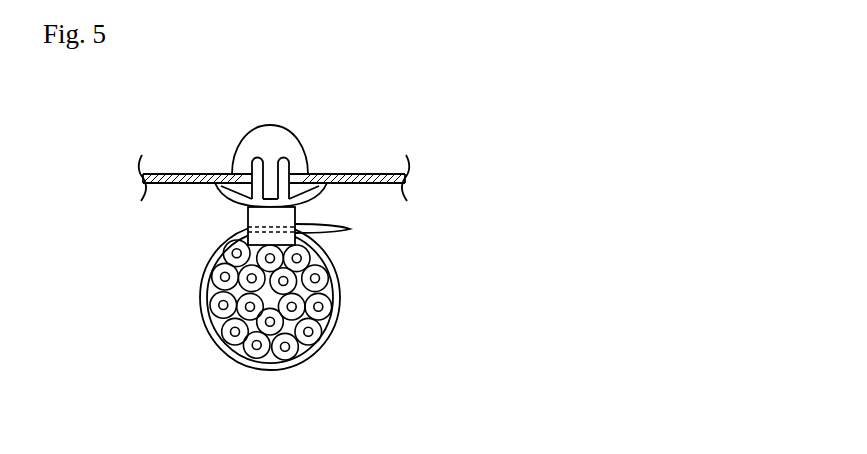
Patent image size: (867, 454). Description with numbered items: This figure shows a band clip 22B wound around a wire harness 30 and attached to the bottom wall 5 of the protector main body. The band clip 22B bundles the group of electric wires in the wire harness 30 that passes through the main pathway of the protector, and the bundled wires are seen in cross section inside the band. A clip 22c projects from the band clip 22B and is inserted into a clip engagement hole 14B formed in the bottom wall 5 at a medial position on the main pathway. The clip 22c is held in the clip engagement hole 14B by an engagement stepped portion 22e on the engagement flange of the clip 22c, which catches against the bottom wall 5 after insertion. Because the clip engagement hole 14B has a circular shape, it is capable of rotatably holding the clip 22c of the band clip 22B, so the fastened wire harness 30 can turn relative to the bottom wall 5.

The bottom wall 5 is at (376, 176).
The clip 22c is at (236, 157).
The clip engagement hole 14B is at (294, 171).
The engagement stepped portion 22e is at (221, 178).
The band clip 22B is at (339, 302).
The wire harness 30 is at (310, 333).